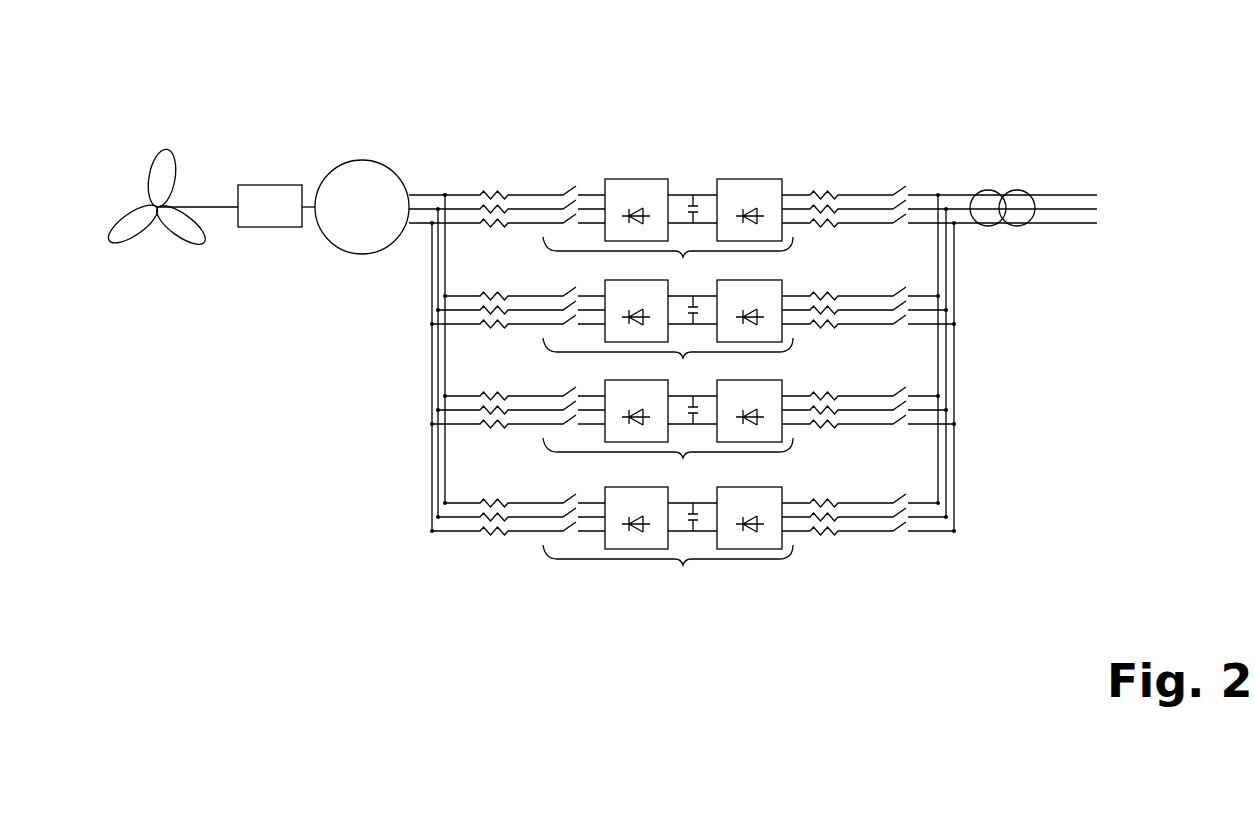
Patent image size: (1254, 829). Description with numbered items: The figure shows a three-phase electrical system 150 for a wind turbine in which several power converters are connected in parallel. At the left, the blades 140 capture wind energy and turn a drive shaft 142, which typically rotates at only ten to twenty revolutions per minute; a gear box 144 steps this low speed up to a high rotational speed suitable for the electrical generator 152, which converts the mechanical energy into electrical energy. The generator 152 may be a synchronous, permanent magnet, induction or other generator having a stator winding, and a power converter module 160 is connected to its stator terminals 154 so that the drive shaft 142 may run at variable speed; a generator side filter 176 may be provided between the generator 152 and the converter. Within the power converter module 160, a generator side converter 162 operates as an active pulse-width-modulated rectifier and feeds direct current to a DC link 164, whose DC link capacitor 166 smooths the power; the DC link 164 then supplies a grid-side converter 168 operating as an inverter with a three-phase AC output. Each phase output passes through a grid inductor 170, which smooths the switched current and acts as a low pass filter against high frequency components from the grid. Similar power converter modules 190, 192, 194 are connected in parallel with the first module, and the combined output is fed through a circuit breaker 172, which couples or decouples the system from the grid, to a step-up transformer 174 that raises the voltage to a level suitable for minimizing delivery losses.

The blades 140 is at (165, 150).
The drive shaft 142 is at (205, 206).
The gear box 144 is at (262, 185).
The three-phase electrical system 150 is at (600, 103).
The electrical generator 152 is at (362, 160).
The stator terminals 154 is at (410, 228).
The power converter module 160 is at (764, 298).
The generator side converter 162 is at (650, 179).
The DC link 164 is at (698, 189).
The DC link capacitor 166 is at (677, 190).
The grid-side converter 168 is at (750, 179).
The grid inductor 170 is at (838, 226).
The circuit breaker 172 is at (897, 172).
The step-up transformer 174 is at (988, 190).
The generator side filter 176 is at (484, 190).
The power converter module 190 is at (693, 331).
The power converter module 192 is at (693, 433).
The power converter module 194 is at (693, 540).